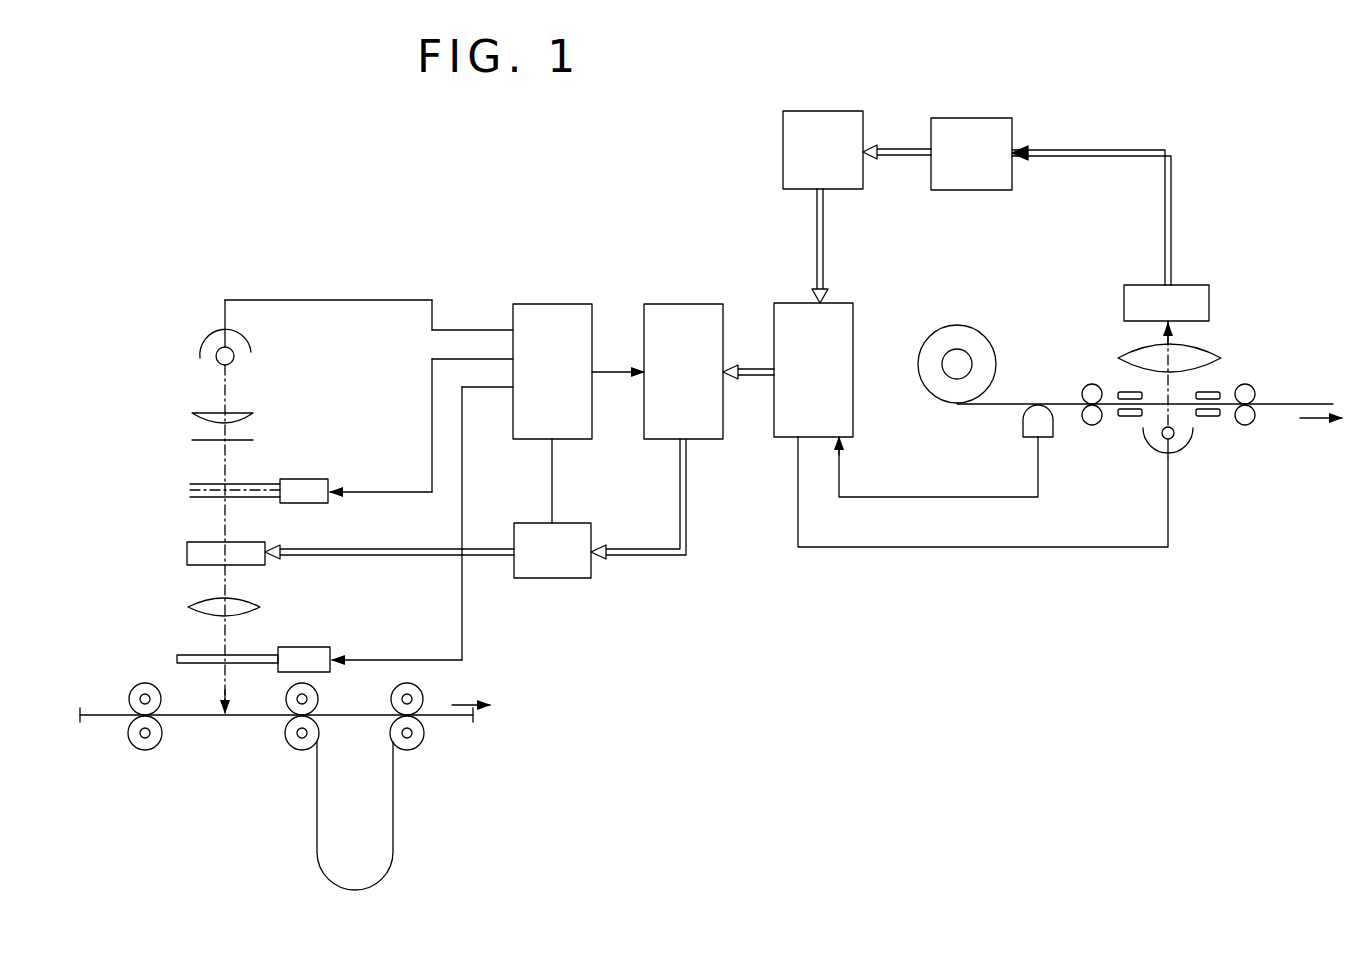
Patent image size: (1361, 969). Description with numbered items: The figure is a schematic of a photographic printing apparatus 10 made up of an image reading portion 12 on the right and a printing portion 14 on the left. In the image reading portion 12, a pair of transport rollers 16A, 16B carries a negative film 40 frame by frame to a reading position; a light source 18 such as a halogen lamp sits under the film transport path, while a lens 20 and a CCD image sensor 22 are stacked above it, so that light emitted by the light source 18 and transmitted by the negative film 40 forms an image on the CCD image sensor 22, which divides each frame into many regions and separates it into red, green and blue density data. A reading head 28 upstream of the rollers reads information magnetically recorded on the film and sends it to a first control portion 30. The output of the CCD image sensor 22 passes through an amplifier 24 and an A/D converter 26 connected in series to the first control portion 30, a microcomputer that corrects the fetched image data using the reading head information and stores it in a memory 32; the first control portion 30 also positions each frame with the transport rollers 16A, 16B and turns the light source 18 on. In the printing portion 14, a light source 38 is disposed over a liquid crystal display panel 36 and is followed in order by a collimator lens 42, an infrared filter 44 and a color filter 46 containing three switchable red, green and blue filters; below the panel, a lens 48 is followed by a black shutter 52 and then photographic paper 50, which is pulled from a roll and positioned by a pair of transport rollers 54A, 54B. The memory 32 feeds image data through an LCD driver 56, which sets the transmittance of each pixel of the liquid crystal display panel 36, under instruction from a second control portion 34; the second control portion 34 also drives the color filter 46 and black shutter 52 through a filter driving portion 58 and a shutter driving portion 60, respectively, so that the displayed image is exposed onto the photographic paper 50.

The photographic printing apparatus 10 is at (1226, 165).
The image reading portion 12 is at (1082, 668).
The printing portion 14 is at (357, 258).
The transport roller 16A is at (1091, 382).
The transport roller 16B is at (1250, 428).
The light source 18 is at (1148, 447).
The lens 20 is at (1215, 352).
The CCD image sensor 22 is at (1209, 290).
The amplifier 24 is at (990, 118).
The A/D converter 26 is at (848, 111).
The reading head 28 is at (1023, 424).
The first control portion 30 is at (830, 388).
The memory 32 is at (701, 388).
The second control portion 34 is at (570, 388).
The liquid crystal display panel 36 is at (187, 552).
The light source 38 is at (205, 338).
The negative film 40 is at (1295, 400).
The collimator lens 42 is at (205, 413).
The infrared filter 44 is at (195, 438).
The color filter 46 is at (190, 483).
The lens 48 is at (188, 607).
The photographic paper 50 is at (100, 718).
The black shutter 52 is at (258, 655).
The transport roller 54A is at (150, 750).
The transport roller 54B is at (290, 745).
The LCD driver 56 is at (580, 578).
The filter driving portion 58 is at (306, 480).
The shutter driving portion 60 is at (320, 648).